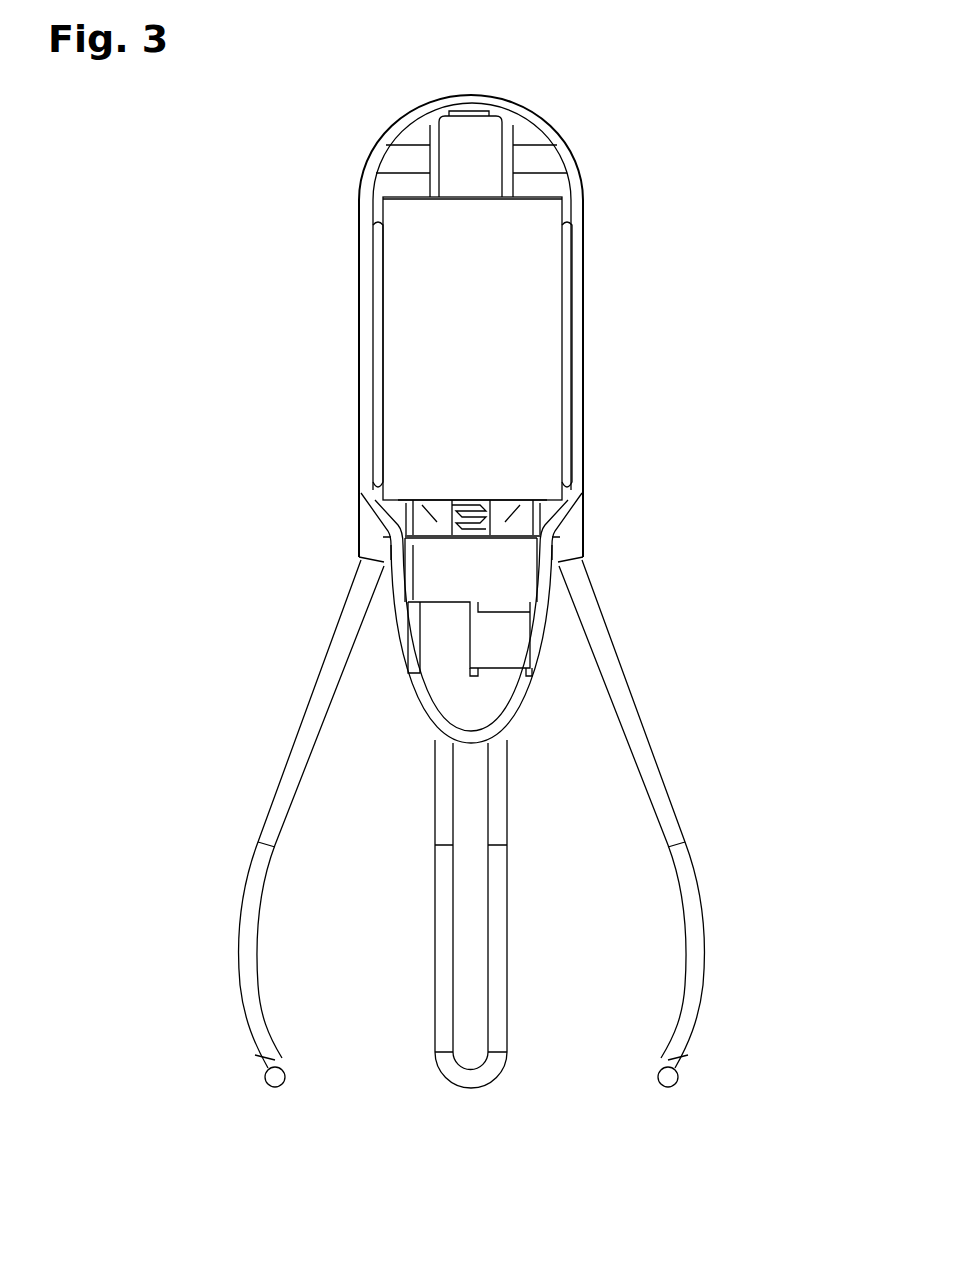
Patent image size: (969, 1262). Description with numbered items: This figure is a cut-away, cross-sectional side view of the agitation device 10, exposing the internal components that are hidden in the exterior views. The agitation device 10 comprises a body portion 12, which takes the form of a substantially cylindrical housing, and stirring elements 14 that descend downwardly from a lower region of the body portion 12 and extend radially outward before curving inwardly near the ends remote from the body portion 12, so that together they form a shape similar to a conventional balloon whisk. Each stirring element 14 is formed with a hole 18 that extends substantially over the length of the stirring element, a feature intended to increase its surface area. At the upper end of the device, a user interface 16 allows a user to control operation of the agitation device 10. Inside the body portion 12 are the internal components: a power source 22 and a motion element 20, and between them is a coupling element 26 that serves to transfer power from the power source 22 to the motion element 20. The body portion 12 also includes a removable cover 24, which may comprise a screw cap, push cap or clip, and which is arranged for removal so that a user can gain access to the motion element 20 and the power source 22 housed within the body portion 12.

The agitation device 10 is at (643, 198).
The body portion 12 is at (368, 326).
The stirring elements 14 is at (692, 887).
The user interface 16 is at (391, 146).
The hole 18 is at (463, 1000).
The motion element 20 is at (510, 572).
The power source 22 is at (530, 358).
The removable cover 24 is at (517, 710).
The coupling element 26 is at (415, 502).